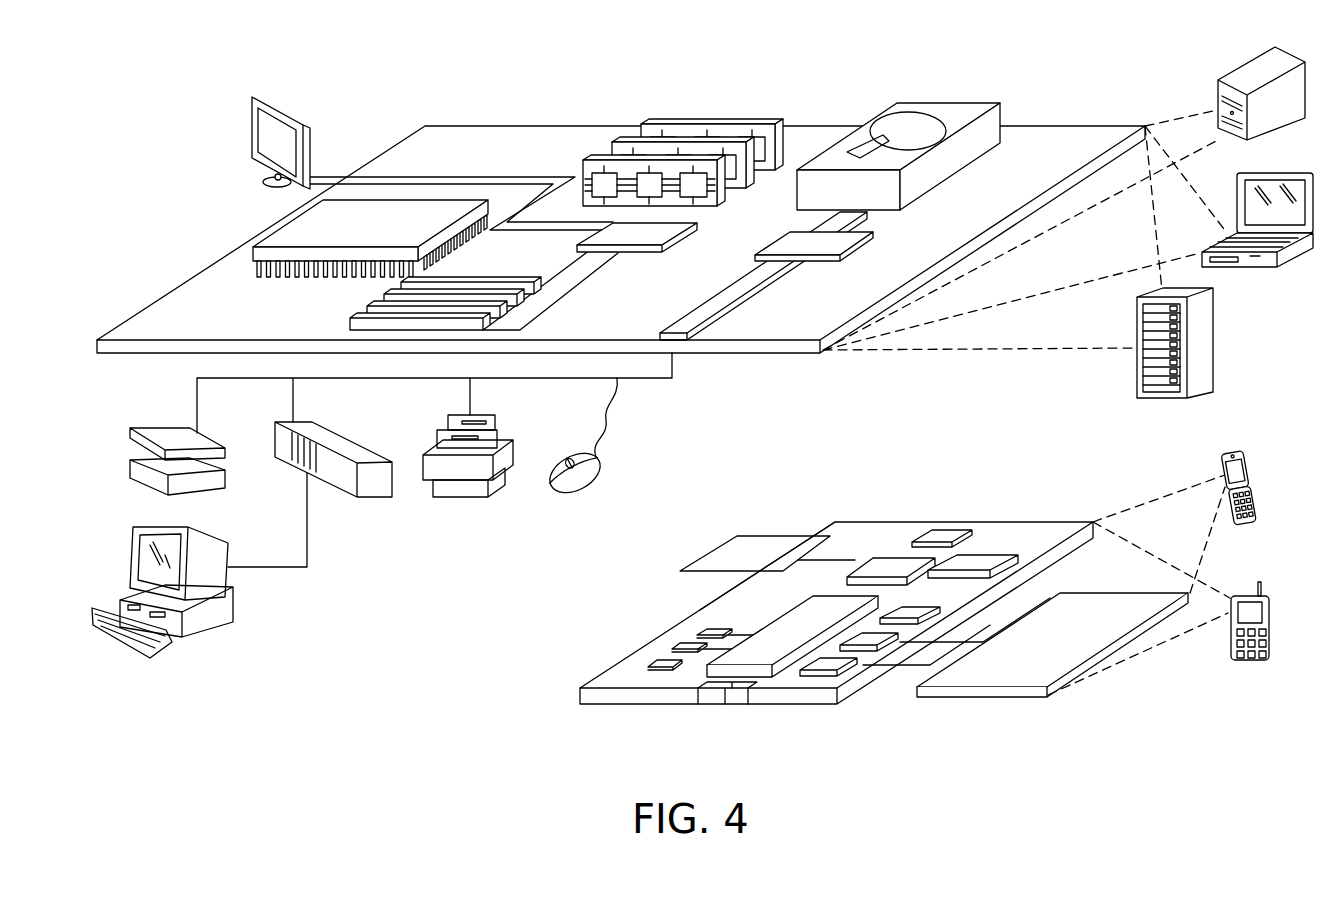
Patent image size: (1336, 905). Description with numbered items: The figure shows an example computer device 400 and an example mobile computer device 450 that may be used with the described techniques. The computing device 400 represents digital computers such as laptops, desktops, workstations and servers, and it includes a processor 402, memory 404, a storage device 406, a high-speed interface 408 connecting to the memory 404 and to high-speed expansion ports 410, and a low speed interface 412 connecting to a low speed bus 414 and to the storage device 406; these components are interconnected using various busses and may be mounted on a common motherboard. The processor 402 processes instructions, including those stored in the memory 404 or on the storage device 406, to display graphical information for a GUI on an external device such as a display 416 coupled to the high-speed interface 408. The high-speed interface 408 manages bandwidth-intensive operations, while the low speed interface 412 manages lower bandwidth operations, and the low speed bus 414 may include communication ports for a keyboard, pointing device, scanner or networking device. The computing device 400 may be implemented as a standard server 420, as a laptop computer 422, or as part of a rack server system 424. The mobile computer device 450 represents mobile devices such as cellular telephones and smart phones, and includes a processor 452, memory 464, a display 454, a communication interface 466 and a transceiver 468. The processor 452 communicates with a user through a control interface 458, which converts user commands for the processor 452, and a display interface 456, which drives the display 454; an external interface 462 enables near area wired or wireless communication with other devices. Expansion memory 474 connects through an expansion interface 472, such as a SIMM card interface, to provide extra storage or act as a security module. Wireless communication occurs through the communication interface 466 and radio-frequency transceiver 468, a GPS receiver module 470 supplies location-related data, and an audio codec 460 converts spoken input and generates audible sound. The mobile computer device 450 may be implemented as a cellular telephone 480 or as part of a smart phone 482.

The computing device 400 is at (381, 74).
The processor 402 is at (278, 227).
The memory 404 is at (716, 118).
The storage device 406 is at (941, 102).
The high-speed interface 408 is at (651, 235).
The high-speed expansion ports 410 is at (375, 304).
The low speed interface 412 is at (791, 238).
The low speed bus 414 is at (681, 324).
The display 416 is at (257, 98).
The standard server 420 is at (1234, 73).
The laptop computer 422 is at (1293, 171).
The rack server system 424 is at (1215, 343).
The mobile computer device 450 is at (533, 712).
The processor 452 is at (762, 640).
The display 454 is at (1092, 610).
The display interface 456 is at (838, 664).
The control interface 458 is at (875, 638).
The audio codec 460 is at (912, 607).
The external interface 462 is at (723, 704).
The memory 464 is at (677, 646).
The communication interface 466 is at (892, 555).
The transceiver 468 is at (980, 556).
The GPS receiver module 470 is at (941, 531).
The expansion interface 472 is at (818, 535).
The expansion memory 474 is at (735, 535).
The cellular telephone 480 is at (1235, 447).
The smart phone 482 is at (1247, 593).